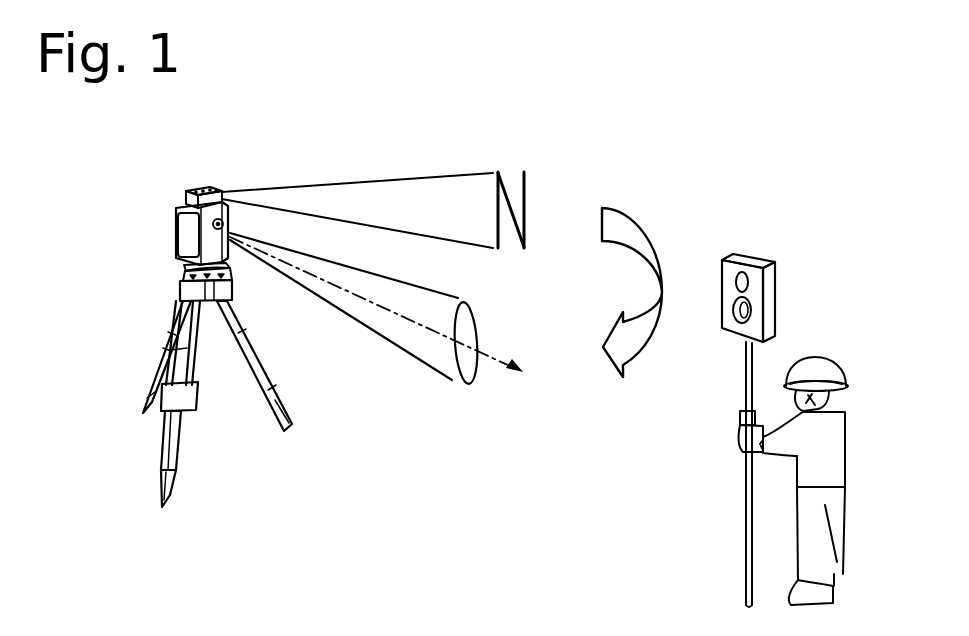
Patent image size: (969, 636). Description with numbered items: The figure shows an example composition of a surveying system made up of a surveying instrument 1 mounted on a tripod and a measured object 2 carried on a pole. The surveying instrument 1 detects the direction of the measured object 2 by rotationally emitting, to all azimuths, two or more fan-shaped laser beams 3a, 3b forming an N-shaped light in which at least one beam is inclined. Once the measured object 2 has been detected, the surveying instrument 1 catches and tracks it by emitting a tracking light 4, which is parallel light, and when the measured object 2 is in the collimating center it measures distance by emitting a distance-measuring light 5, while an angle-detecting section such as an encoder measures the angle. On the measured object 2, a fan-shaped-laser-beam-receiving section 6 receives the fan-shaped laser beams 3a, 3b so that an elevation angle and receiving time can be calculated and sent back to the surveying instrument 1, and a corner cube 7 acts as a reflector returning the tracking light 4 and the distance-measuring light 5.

The surveying instrument 1 is at (166, 194).
The measured object 2 is at (751, 395).
The fan-shaped laser beam 3a is at (498, 220).
The fan-shaped laser beam 3b is at (512, 190).
The tracking light 4 is at (478, 347).
The distance-measuring light 5 is at (424, 363).
The fan-shaped-laser-beam-receiving section 6 is at (736, 279).
The corner cube 7 is at (750, 313).